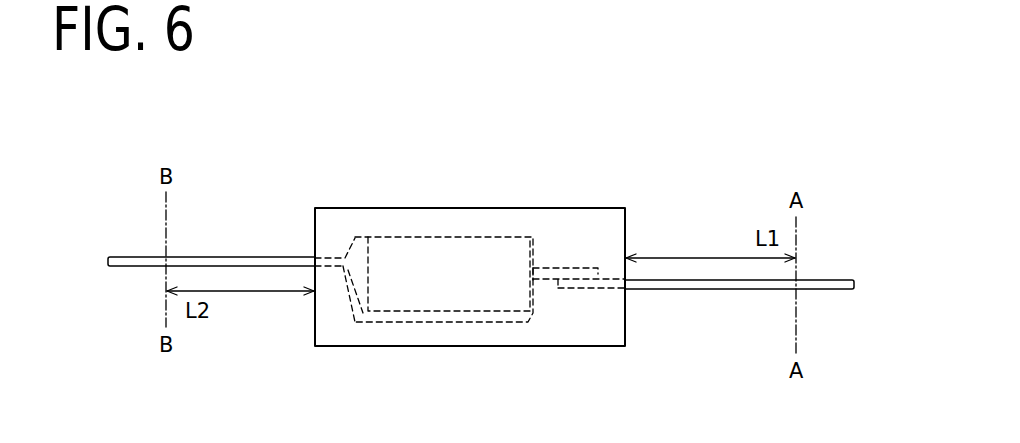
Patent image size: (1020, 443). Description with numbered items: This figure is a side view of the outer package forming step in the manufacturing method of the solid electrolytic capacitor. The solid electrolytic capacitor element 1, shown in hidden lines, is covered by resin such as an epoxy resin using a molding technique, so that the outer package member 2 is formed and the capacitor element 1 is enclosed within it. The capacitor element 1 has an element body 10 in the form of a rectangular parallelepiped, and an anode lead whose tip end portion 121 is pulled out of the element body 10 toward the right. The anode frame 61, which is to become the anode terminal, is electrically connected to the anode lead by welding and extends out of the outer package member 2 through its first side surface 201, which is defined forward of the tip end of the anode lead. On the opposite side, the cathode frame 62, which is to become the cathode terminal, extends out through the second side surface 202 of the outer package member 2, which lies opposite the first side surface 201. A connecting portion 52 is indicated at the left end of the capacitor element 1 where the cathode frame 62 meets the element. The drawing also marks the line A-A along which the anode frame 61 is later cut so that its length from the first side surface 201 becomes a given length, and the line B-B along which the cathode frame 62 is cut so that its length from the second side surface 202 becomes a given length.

The solid electrolytic capacitor element 1 is at (530, 237).
The element body 10 is at (455, 243).
The tip end portion 121 is at (575, 268).
The outer package member 2 is at (568, 334).
The first side surface 201 is at (627, 333).
The second side surface 202 is at (313, 333).
The connection portion 52 is at (352, 235).
The anode frame 61 is at (706, 282).
The cathode frame 62 is at (235, 262).